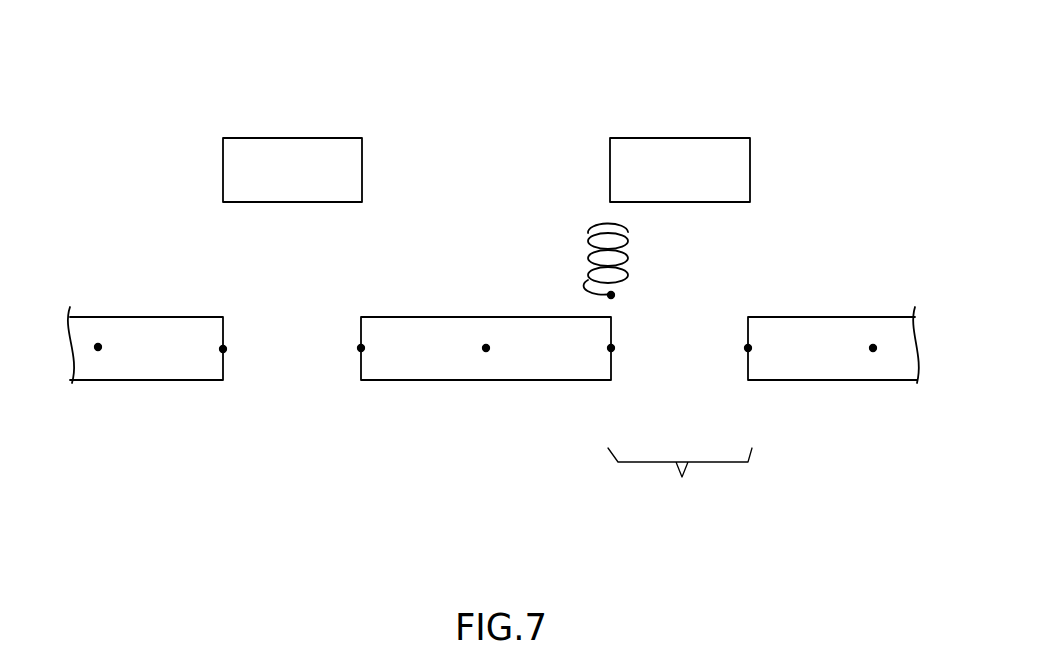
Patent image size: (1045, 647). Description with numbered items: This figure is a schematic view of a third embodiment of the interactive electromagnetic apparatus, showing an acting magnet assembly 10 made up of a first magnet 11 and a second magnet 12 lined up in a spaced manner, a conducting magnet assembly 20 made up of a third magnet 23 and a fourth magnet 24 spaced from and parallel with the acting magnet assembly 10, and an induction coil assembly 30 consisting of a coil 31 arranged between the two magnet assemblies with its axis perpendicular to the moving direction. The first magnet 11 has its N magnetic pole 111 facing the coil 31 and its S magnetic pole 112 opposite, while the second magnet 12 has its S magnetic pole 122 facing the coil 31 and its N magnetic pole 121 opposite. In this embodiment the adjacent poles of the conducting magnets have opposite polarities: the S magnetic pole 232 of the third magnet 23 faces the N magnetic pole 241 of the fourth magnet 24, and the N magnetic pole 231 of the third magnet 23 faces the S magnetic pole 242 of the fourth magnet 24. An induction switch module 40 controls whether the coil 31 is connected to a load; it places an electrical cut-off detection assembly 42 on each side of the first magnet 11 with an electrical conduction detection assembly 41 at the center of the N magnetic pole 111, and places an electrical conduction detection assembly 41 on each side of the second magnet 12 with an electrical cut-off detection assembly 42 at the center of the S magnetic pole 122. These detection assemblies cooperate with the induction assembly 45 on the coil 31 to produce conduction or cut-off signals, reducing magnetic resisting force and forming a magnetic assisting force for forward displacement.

The acting magnet assembly 10 is at (127, 482).
The first magnet 11 is at (428, 380).
The N magnetic pole 111 is at (487, 318).
The S magnetic pole 112 is at (490, 380).
The second magnet 12 is at (157, 380).
The N magnetic pole 121 is at (91, 384).
The S magnetic pole 122 is at (97, 317).
The conducting magnet assembly 20 is at (233, 104).
The third magnet 23 is at (293, 138).
The N magnetic pole 231 is at (223, 170).
The S magnetic pole 232 is at (363, 170).
The fourth magnet 24 is at (683, 138).
The N magnetic pole 241 is at (610, 170).
The S magnetic pole 242 is at (751, 170).
The induction coil assembly 30 is at (548, 245).
The coil 31 is at (628, 252).
The induction switch module 40 is at (680, 483).
The electrical conduction detection assembly 41 is at (223, 349).
The electrical cut-off detection assembly 42 is at (98, 347).
The induction assembly 45 is at (611, 295).